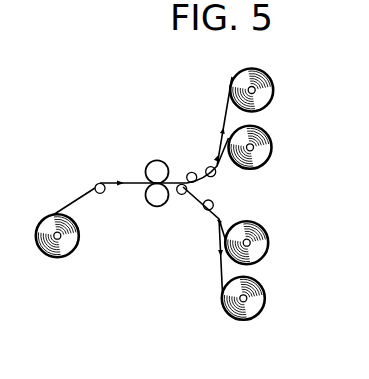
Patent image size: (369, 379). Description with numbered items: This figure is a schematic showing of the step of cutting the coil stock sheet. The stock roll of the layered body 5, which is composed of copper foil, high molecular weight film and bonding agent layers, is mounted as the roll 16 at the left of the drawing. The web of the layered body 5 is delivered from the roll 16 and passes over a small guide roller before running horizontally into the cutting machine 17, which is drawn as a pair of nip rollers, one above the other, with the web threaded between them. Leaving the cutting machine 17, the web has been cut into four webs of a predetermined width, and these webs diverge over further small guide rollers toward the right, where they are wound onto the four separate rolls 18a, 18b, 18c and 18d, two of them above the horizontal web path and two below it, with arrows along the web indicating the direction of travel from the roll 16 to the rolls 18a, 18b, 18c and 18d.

The layered body 5 is at (78, 193).
The roll 16 is at (58, 240).
The cutting machine 17 is at (152, 211).
The take-up roll 18a is at (273, 92).
The take-up roll 18b is at (271, 149).
The take-up roll 18c is at (268, 242).
The take-up roll 18d is at (264, 299).